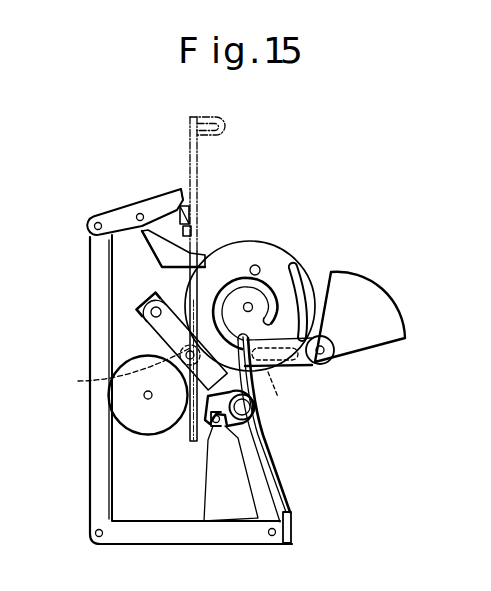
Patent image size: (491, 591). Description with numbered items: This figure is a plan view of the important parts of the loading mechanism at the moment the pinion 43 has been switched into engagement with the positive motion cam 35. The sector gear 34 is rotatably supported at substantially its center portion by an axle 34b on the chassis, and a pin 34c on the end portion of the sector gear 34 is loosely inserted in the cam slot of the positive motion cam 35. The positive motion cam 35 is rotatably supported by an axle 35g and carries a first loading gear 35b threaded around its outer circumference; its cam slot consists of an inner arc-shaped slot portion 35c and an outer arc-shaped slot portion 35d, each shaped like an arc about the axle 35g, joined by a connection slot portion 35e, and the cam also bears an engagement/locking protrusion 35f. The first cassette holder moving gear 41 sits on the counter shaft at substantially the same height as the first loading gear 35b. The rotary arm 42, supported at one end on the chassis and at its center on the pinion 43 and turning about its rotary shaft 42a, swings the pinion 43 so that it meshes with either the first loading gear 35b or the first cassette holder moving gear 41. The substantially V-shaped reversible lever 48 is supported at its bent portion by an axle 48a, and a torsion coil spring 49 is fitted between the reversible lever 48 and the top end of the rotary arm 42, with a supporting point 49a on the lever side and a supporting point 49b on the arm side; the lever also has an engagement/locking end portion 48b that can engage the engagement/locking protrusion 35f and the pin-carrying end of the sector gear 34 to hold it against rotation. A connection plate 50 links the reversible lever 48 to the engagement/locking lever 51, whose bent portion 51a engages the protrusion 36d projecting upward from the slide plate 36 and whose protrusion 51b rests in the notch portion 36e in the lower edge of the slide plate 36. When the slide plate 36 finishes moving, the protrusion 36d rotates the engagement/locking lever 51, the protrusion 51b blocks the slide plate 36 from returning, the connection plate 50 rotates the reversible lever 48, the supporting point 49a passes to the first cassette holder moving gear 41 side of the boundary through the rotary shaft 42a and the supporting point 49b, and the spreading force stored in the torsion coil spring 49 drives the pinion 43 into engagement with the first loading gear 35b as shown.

The sector gear 34 is at (408, 333).
The axle 34b is at (323, 353).
The pin 34c is at (291, 387).
The positive motion cam 35 is at (258, 241).
The first loading gear 35b is at (253, 307).
The inner arc-shaped slot portion 35c is at (299, 277).
The outer arc-shaped slot portion 35d is at (333, 277).
The connection slot portion 35e is at (215, 288).
The engagement/locking protrusion 35f is at (257, 266).
The axle 35g is at (318, 335).
The slide plate 36 is at (188, 155).
The protrusion 36d is at (188, 212).
The notch portion 36e is at (190, 233).
The first cassette holder moving gear 41 is at (146, 435).
The rotary arm 42 is at (146, 324).
The rotary shaft 42a is at (138, 298).
The pinion 43 is at (122, 369).
The reversible lever 48 is at (262, 483).
The axle 48a is at (285, 545).
The engagement/locking end portion 48b is at (313, 339).
The torsion coil spring 49 is at (258, 415).
The supporting point 49a is at (225, 455).
The supporting point 49b is at (209, 438).
The connection plate 50 is at (92, 478).
The engagement/locking lever 51 is at (110, 220).
The bent portion 51a is at (178, 193).
The protrusion 51b is at (163, 258).